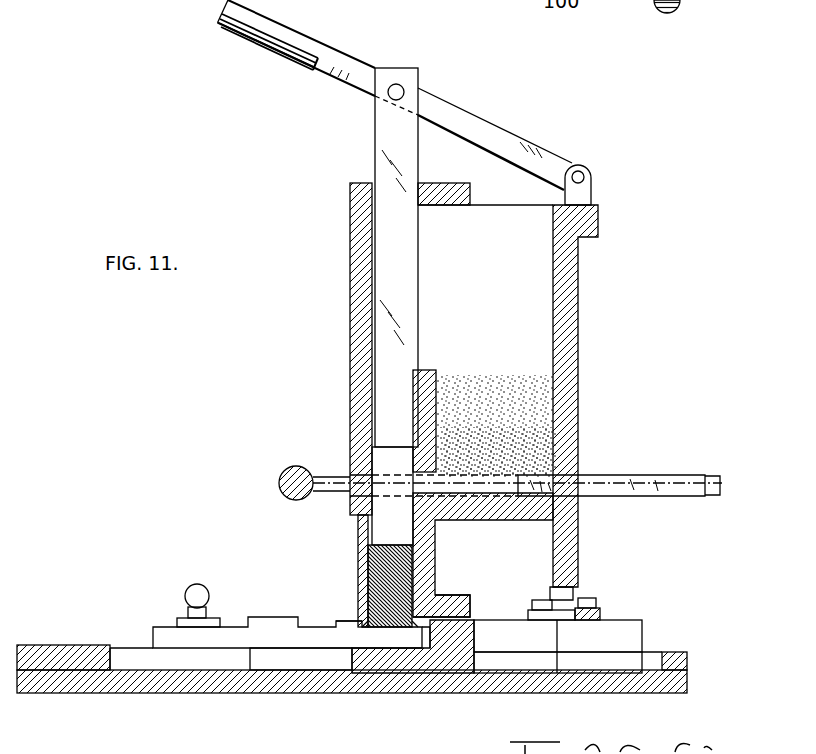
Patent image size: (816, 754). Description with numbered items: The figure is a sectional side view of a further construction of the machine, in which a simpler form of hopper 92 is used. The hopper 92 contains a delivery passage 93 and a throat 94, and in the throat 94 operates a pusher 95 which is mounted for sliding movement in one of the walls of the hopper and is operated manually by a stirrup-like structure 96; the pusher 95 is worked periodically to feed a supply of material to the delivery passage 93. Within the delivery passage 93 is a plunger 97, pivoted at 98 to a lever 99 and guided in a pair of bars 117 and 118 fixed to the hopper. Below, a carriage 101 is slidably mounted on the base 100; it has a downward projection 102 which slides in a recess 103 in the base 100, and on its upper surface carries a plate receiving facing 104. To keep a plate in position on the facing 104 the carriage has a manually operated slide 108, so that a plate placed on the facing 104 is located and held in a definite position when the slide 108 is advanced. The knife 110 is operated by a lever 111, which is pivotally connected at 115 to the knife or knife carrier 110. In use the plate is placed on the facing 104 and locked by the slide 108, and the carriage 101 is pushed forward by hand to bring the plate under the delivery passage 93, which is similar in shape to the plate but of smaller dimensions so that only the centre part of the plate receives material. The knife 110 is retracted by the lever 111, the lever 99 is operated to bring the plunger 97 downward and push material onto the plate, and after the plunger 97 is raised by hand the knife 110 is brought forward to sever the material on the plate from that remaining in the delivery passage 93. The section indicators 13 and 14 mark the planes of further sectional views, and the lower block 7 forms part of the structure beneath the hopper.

The base block 7 is at (416, 598).
The section line 13- 13 is at (378, 66).
The section line 14- 14 is at (145, 618).
The hopper 92 is at (577, 388).
The delivery passage 93 is at (378, 457).
The throat 94 is at (428, 482).
The pusher 95 is at (630, 483).
The stirrup-like structure 96 is at (305, 498).
The plunger 97 is at (400, 330).
The pivot 98 is at (402, 90).
The lever 99 is at (520, 152).
The base 100 is at (463, 675).
The carriage 101 is at (259, 628).
The downward projection 102 is at (301, 660).
The recess 103 is at (185, 655).
The plate receiving facing 104 is at (410, 628).
The slide 108 is at (346, 620).
The knife 110 is at (495, 624).
The lever 111 is at (600, 613).
The pivotal connection 115 is at (585, 606).
The bar 117 is at (436, 196).
The bar 118 is at (432, 388).